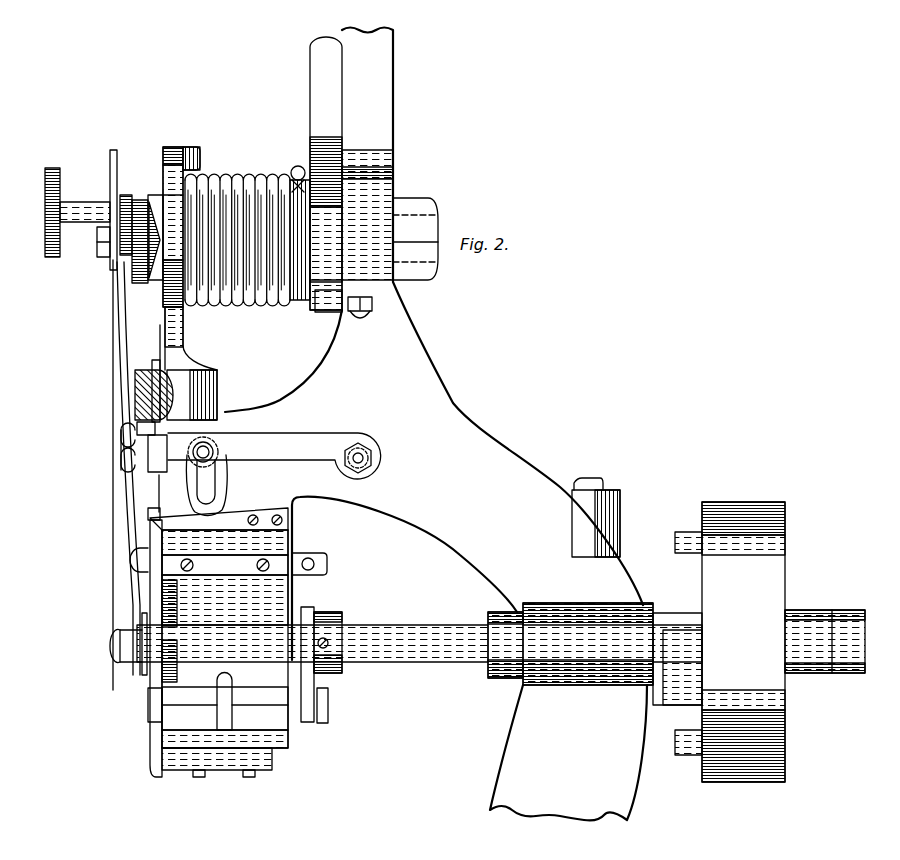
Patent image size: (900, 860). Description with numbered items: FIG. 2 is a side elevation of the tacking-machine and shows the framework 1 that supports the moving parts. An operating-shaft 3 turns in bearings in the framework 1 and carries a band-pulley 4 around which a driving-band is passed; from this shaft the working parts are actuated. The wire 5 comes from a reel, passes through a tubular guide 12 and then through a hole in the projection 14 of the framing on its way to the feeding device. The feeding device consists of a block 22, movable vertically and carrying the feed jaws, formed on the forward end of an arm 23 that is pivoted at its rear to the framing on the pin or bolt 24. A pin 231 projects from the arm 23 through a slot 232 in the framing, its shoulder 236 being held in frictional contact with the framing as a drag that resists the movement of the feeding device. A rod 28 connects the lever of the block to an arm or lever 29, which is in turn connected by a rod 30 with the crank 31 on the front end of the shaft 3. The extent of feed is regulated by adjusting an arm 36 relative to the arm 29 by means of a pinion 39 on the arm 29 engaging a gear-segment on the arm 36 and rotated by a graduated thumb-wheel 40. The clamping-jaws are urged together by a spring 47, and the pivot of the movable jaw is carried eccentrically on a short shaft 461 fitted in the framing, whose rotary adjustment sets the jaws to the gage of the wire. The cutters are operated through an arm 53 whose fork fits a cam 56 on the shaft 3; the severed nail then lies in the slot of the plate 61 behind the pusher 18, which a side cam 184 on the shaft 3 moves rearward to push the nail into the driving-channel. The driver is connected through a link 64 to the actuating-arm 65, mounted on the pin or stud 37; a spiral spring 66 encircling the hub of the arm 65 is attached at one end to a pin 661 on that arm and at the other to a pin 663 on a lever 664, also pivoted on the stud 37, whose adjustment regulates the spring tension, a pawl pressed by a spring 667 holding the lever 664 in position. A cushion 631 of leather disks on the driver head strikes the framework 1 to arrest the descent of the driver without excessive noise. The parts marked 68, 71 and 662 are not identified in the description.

The framework 1 is at (470, 480).
The operating-shaft 3 is at (394, 621).
The band-pulley 4 is at (730, 642).
The wire 5 is at (158, 487).
The tubular guide 12 is at (152, 362).
The projection 14 is at (140, 418).
The pusher 18 is at (148, 737).
The block 22 is at (148, 458).
The arm 23 is at (274, 456).
The pivotal pin or bolt 24 is at (372, 457).
The rod 28 is at (112, 306).
The arm or lever 29 is at (137, 200).
The rod 30 is at (106, 526).
The crank 31 is at (135, 668).
The arm 36 is at (113, 150).
The pin or stud 37 is at (99, 254).
The pinion 39 is at (118, 205).
The thumb-wheel 40 is at (52, 163).
The spring 47 is at (209, 628).
The arm 53 is at (318, 682).
The cam 56 is at (308, 607).
The plate 61 is at (154, 766).
The link 64 is at (189, 317).
The actuating-arm 65 is at (180, 146).
The spiral spring 66 is at (237, 172).
The gear hub 68 is at (160, 165).
The cone 71 is at (158, 241).
The side cam 184 is at (136, 615).
The pin 231 is at (216, 458).
The slot 232 is at (221, 493).
The shoulder 236 is at (219, 446).
The short shaft 461 is at (328, 562).
The cushion 631 is at (218, 385).
The pin or projection 661 is at (200, 163).
The hub 662 is at (303, 238).
The pin 663 is at (302, 176).
The lever 664 is at (314, 73).
The spring 667 is at (348, 312).